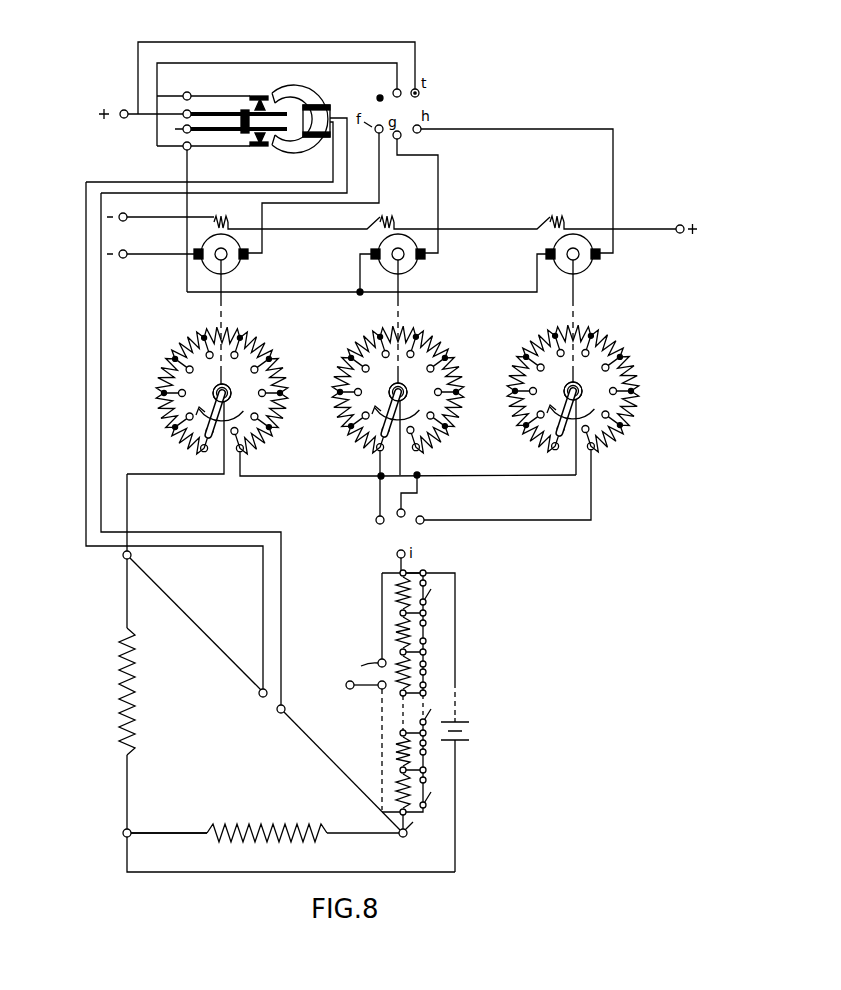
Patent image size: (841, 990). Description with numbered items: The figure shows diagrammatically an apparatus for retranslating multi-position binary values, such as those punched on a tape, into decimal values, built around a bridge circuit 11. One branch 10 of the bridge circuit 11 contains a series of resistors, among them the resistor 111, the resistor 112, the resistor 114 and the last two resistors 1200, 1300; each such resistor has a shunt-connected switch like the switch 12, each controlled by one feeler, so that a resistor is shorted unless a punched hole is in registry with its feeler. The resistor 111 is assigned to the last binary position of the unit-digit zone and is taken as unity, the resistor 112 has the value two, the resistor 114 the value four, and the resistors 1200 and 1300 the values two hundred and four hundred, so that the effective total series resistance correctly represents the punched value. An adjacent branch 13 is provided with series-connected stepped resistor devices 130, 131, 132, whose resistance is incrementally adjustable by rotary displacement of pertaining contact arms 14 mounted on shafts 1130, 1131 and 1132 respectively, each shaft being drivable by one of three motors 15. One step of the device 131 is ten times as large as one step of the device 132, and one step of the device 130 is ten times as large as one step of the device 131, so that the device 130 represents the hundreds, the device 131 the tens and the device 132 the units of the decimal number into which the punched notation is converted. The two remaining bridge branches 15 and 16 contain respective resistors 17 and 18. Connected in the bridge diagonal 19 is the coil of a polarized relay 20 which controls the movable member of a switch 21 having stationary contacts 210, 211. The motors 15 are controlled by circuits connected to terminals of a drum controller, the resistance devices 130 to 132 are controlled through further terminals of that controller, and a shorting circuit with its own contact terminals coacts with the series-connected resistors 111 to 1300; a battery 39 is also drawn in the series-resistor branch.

The bridge branch 10 is at (415, 836).
The bridge circuit 11 is at (236, 746).
The switch 12 is at (430, 591).
The bridge branch 13 is at (128, 519).
The contact arm 14 is at (183, 433).
The bridge branch / motor 15 is at (229, 240).
The bridge branch 16 is at (183, 832).
The resistor 17 is at (139, 688).
The resistor 18 is at (291, 830).
The bridge diagonal 19 is at (88, 339).
The polarized relay 20 is at (318, 118).
The switch 21 is at (233, 118).
The battery 39 is at (460, 722).
The resistor 111 is at (398, 598).
The resistor 112 is at (397, 636).
The resistor 114 is at (410, 675).
The stepped resistor device 130 is at (163, 378).
The stepped resistor device 131 is at (372, 362).
The stepped resistor device 132 is at (599, 355).
The stationary contact 210 is at (262, 96).
The stationary contact 211 is at (257, 150).
The shaft 1130 is at (230, 388).
The shaft 1131 is at (407, 387).
The shaft 1132 is at (582, 387).
The resistor 1200 is at (412, 759).
The resistor 1300 is at (428, 795).